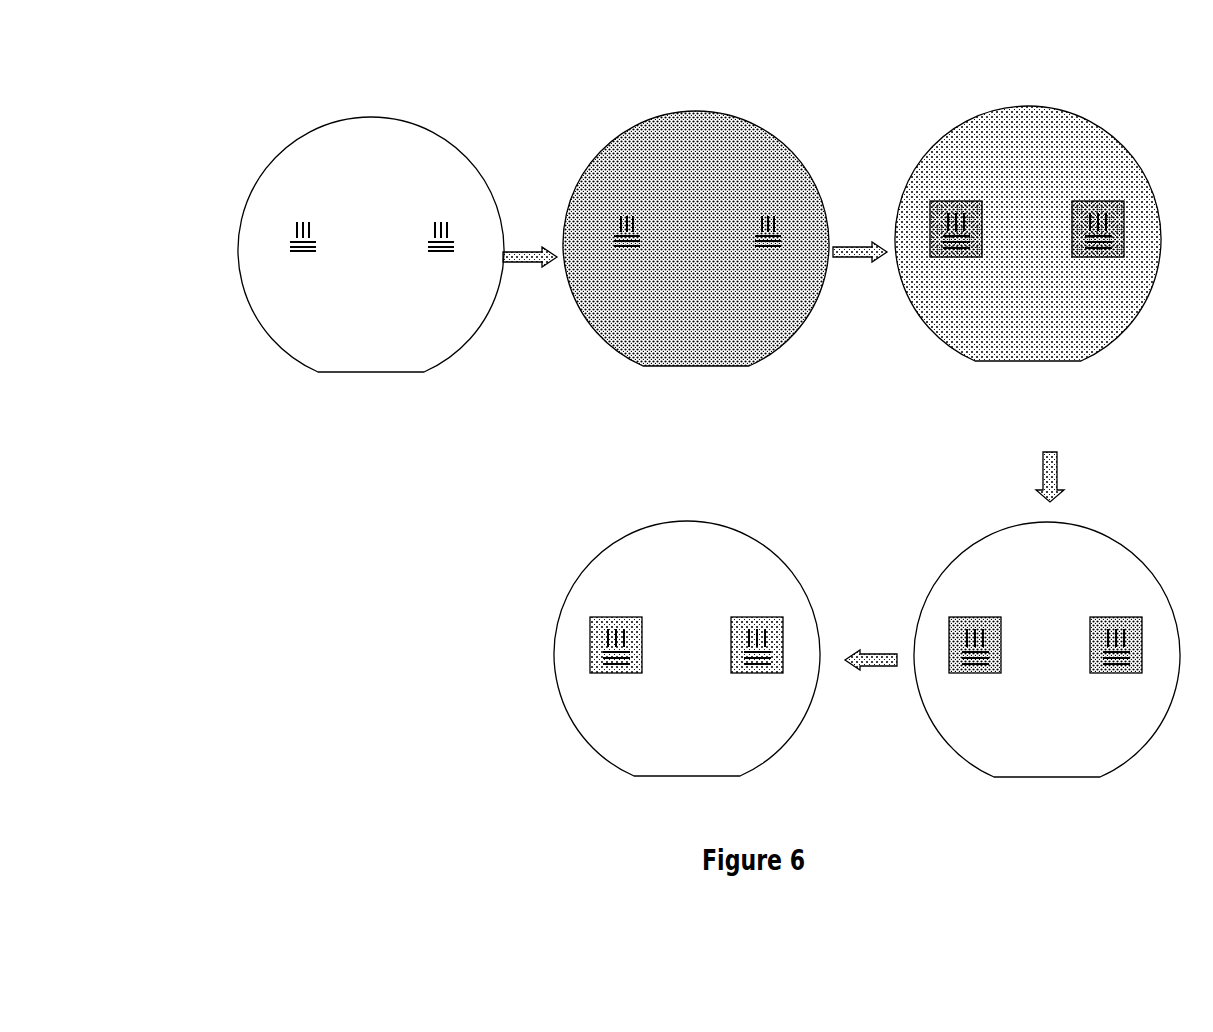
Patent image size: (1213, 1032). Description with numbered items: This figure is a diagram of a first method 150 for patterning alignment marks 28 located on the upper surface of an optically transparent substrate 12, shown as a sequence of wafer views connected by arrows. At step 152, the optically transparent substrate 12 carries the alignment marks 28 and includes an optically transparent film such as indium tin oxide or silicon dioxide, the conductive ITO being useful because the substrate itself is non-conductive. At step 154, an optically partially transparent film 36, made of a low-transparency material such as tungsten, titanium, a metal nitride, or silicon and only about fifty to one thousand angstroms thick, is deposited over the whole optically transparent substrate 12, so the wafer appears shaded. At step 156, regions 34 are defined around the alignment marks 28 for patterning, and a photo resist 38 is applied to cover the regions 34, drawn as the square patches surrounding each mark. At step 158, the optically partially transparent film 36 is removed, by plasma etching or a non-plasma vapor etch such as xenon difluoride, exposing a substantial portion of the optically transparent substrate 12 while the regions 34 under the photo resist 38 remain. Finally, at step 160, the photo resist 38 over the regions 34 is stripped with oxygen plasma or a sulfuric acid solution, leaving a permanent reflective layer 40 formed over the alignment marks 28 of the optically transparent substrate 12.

The first method 150 is at (235, 110).
The optically transparent substrate 12 is at (283, 338).
The alignment marks 28 is at (428, 228).
The optically partially transparent film 36 is at (640, 330).
The photo resist 38 is at (937, 218).
The regions 34 is at (1118, 618).
The permanent reflective layer 40 is at (745, 680).
The step 152 is at (395, 449).
The step 154 is at (731, 437).
The step 156 is at (1047, 432).
The step 158 is at (1077, 822).
The step 160 is at (712, 819).